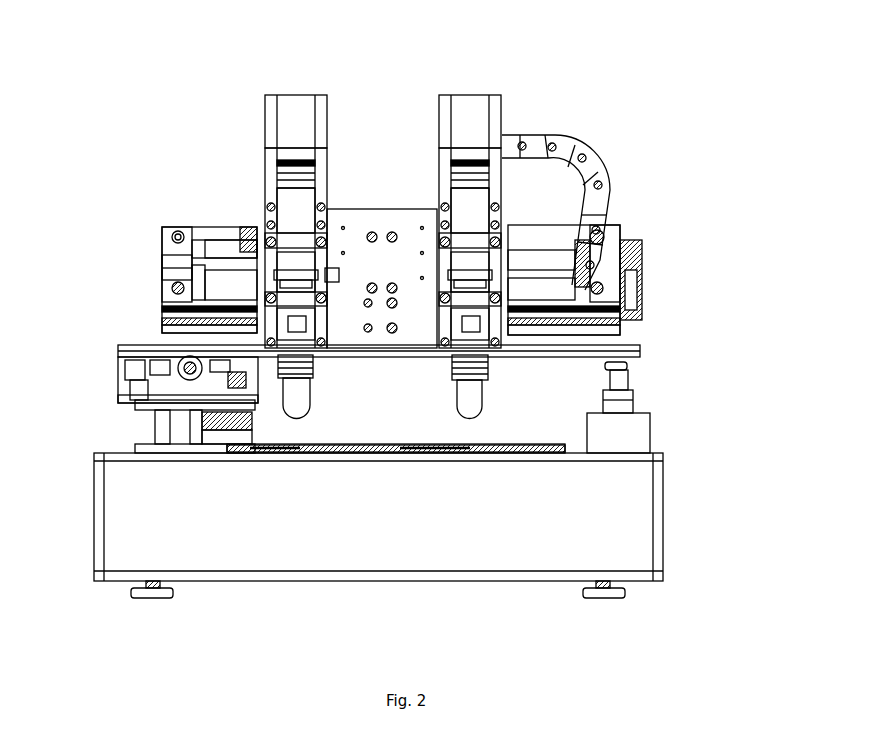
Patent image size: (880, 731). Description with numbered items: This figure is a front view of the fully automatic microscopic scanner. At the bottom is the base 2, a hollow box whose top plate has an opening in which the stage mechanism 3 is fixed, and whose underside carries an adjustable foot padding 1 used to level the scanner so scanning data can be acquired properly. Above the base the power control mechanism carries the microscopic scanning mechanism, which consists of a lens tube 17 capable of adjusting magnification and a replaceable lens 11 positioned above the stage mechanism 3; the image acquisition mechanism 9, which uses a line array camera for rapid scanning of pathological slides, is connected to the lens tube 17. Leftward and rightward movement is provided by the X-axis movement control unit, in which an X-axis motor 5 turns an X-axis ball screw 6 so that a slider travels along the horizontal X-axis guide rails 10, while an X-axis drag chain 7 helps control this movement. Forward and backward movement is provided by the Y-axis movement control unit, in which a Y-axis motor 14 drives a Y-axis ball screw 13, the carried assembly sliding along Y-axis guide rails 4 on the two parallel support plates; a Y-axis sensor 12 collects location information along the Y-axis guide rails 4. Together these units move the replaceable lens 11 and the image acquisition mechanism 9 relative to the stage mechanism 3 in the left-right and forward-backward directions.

The adjustable foot padding 1 is at (411, 623).
The base 2 is at (436, 517).
The stage mechanism 3 is at (396, 555).
The Y-axis guide rails 4 is at (660, 407).
The X-axis motor 5 is at (676, 280).
The X-axis ball screw 6 is at (417, 256).
The X-axis drag chain 7 is at (615, 203).
The image acquisition mechanism 9 is at (396, 98).
The X-axis guide rails 10 is at (119, 256).
The replaceable lens 11 is at (414, 388).
The Y-axis sensor 12 is at (429, 332).
The Y-axis ball screw 13 is at (152, 355).
The Y-axis motor 14 is at (150, 426).
The lens tube 17 is at (341, 242).